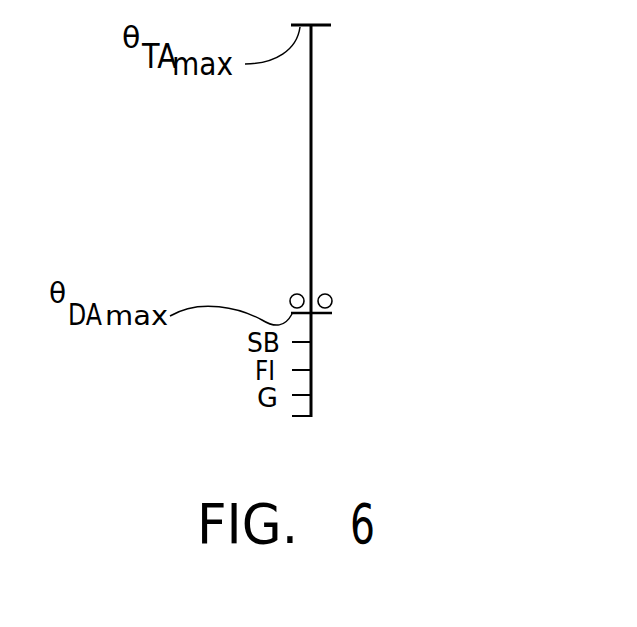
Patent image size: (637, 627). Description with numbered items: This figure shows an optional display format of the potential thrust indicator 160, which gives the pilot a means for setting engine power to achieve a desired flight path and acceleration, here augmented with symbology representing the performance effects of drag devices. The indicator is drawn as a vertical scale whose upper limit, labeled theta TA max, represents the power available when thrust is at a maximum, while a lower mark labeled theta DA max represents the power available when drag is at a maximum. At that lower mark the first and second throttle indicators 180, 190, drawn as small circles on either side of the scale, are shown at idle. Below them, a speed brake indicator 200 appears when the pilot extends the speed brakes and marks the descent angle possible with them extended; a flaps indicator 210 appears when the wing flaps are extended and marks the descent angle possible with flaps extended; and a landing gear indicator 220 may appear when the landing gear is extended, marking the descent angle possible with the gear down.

The potential thrust indicator 160 is at (502, 142).
The first throttle indicator 180 is at (291, 297).
The second throttle indicator 190 is at (329, 296).
The speed brake indicator 200 is at (311, 342).
The flaps indicator 210 is at (311, 370).
The landing gear indicator 220 is at (311, 416).